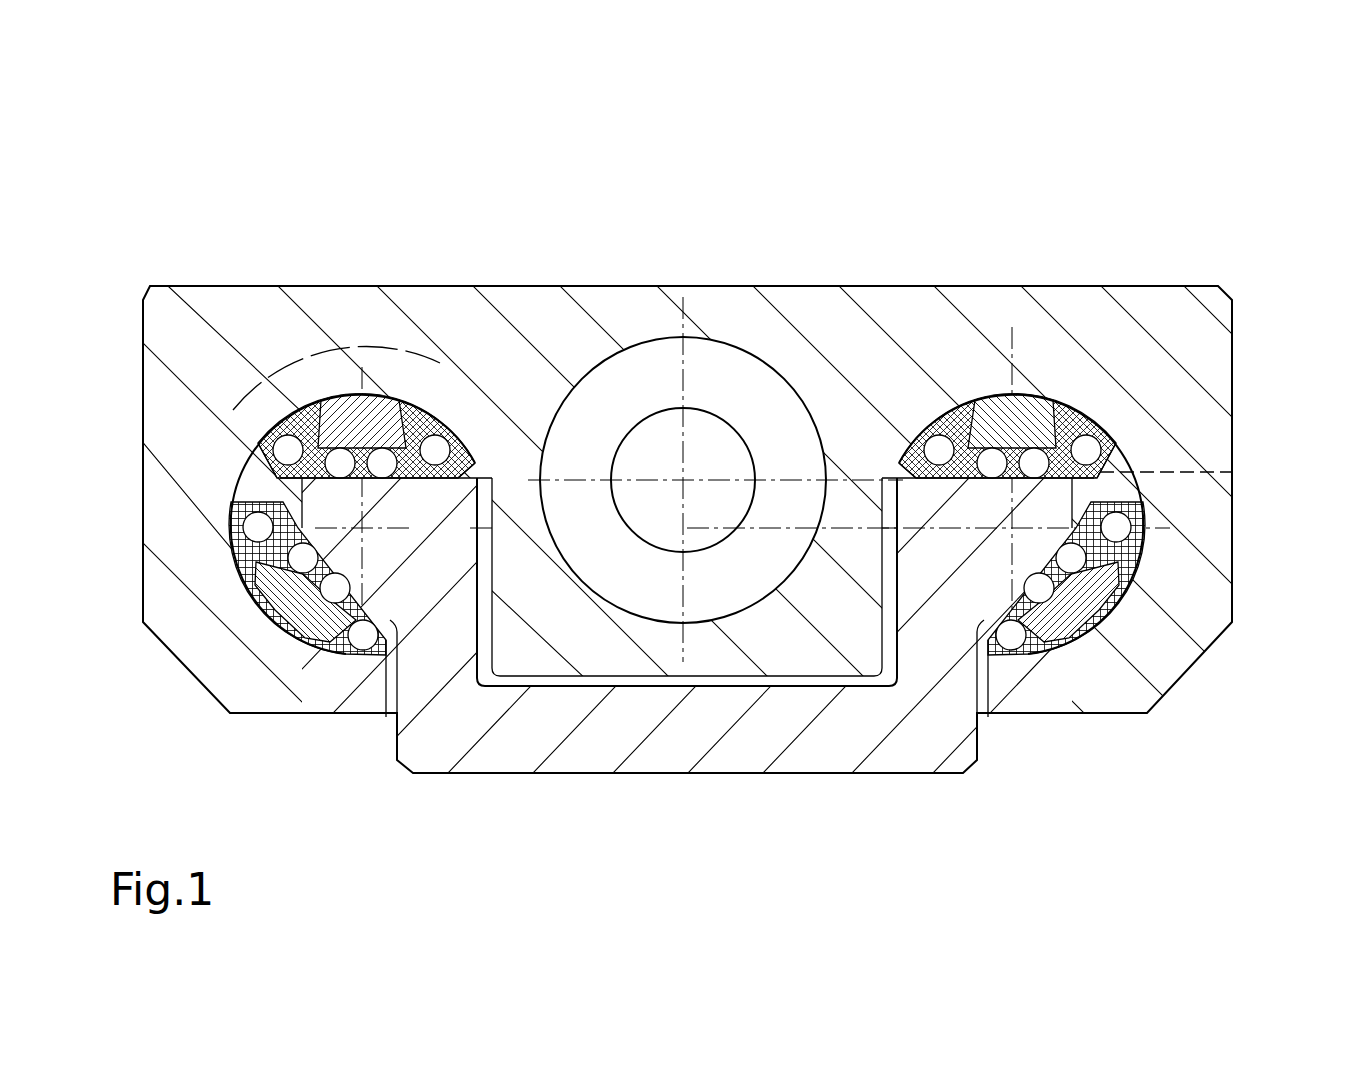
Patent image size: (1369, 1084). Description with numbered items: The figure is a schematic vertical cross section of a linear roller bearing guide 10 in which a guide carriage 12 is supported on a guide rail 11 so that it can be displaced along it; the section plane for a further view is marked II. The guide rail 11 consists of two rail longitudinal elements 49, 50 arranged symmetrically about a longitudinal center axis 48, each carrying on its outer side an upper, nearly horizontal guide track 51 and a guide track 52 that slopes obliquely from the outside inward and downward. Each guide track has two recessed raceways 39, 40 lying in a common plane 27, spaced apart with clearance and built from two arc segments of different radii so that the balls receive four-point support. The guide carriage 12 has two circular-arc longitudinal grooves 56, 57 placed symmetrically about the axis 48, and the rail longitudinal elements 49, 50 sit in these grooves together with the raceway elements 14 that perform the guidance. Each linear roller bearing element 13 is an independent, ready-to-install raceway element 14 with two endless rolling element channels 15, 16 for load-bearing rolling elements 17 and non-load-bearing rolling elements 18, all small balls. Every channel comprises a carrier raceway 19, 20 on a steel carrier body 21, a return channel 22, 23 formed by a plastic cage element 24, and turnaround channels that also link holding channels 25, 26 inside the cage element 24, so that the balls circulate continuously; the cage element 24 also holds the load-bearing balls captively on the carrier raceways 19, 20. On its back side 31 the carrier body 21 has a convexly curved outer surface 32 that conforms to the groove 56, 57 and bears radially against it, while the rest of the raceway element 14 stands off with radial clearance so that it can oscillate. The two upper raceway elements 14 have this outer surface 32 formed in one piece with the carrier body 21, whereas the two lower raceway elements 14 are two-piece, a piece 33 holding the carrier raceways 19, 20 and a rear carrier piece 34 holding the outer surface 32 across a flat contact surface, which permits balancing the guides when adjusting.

The linear roller bearing guide 10 is at (1250, 268).
The guide rail 11 is at (732, 747).
The guide carriage 12 is at (852, 318).
The linear roller bearing element 13 is at (701, 502).
The raceway element 14 is at (300, 413).
The rolling element channel 15 is at (235, 502).
The rolling element channel 16 is at (478, 492).
The load-bearing rolling elements 17 is at (387, 480).
The non-load-bearing rolling elements 18 is at (452, 440).
The carrier raceway 19 is at (336, 402).
The carrier raceway 20 is at (417, 417).
The carrier body 21 is at (352, 420).
The return channel 22 is at (282, 476).
The return channel 23 is at (480, 455).
The cage element 24 is at (470, 425).
The holding channel 25 is at (238, 535).
The holding channel 26 is at (414, 483).
The common plane 27 is at (1232, 473).
The back side 31 is at (360, 417).
The outer surface 32 is at (1135, 585).
The piece 33 is at (348, 657).
The rear carrier piece 34 is at (275, 657).
The recessed raceway 39 is at (1047, 437).
The recessed raceway 40 is at (882, 523).
The longitudinal center axis 48 is at (683, 480).
The rail longitudinal element 49 is at (468, 567).
The rail longitudinal element 50 is at (895, 493).
The guide track 51 is at (472, 466).
The guide track 52 is at (397, 625).
The longitudinal groove 56 is at (233, 410).
The longitudinal groove 57 is at (970, 397).
The section line II is at (232, 408).